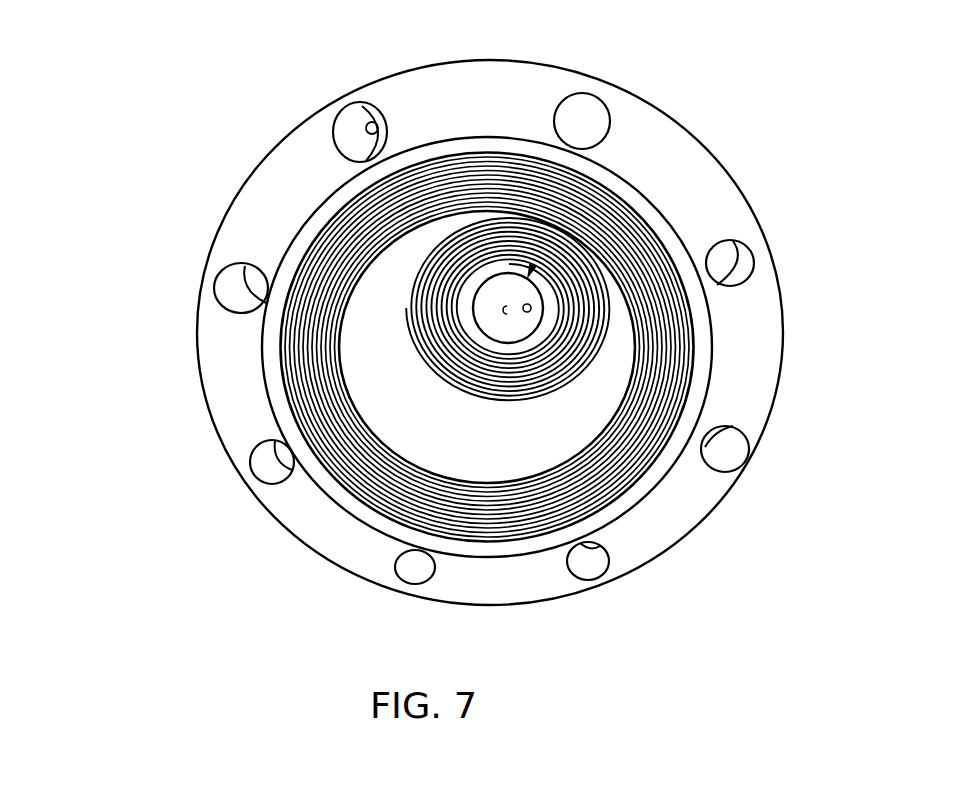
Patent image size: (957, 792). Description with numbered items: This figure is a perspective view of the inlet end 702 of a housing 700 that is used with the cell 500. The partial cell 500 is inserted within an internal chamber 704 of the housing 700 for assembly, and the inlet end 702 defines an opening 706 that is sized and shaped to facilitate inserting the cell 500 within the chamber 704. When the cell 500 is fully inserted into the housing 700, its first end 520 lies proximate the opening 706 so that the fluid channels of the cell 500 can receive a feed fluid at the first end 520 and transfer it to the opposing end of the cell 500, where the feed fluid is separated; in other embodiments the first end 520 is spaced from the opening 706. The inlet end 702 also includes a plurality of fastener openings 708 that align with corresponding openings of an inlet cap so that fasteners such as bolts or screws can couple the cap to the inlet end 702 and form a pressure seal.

The housing 700 is at (127, 45).
The inlet end 702 is at (288, 153).
The internal chamber 704 is at (388, 426).
The opening 706 is at (486, 514).
The fastener openings 708 is at (740, 265).
The cell 500 is at (575, 302).
The first end 520 is at (533, 265).